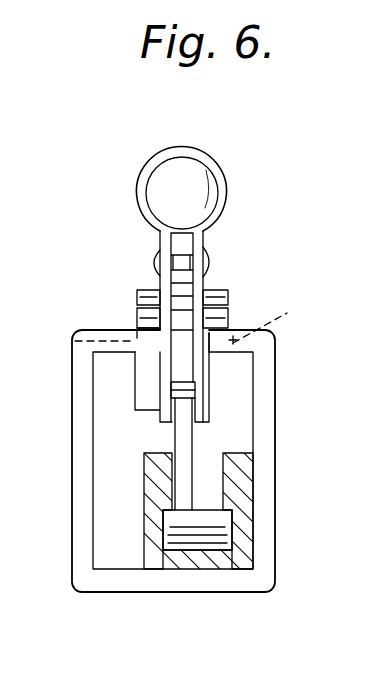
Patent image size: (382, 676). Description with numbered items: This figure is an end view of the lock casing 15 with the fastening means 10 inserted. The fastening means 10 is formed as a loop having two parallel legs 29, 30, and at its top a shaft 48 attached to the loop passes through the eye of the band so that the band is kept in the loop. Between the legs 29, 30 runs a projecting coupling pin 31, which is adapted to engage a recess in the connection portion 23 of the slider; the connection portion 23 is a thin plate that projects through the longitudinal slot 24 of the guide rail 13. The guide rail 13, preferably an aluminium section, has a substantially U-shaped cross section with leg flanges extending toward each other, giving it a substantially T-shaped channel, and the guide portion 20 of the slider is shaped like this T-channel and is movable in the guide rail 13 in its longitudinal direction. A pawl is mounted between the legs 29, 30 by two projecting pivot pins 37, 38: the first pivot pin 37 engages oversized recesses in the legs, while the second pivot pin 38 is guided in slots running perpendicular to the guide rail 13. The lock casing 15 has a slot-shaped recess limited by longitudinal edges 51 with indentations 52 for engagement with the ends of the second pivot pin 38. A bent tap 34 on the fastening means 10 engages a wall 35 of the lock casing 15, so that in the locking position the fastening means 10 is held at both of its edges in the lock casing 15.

The fastening means 10 is at (195, 150).
The shaft 48 is at (207, 178).
The leg 29 is at (207, 240).
The leg 30 is at (160, 240).
The first pivot pin 37 is at (228, 297).
The second pivot pin 38 is at (228, 313).
The longitudinal edges 51 is at (142, 326).
The indentations 52 is at (72, 342).
The wall 35 is at (100, 358).
The coupling pin 31 is at (190, 390).
The bent tap 34 is at (140, 406).
The connection portion 23 is at (192, 445).
The longitudinal slot 24 is at (217, 490).
The guide rail 13 is at (150, 492).
The guide portion 20 is at (198, 540).
The lock casing 15 is at (103, 582).